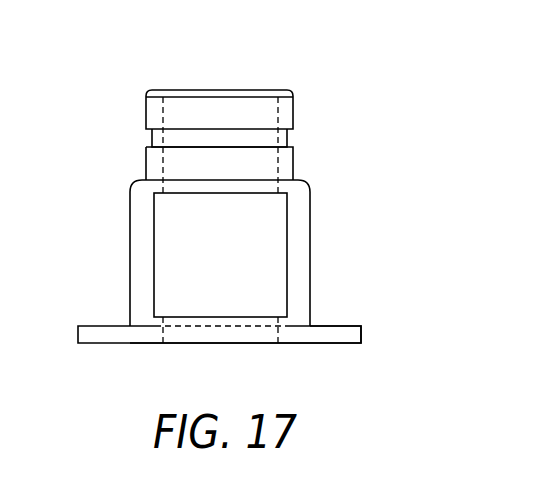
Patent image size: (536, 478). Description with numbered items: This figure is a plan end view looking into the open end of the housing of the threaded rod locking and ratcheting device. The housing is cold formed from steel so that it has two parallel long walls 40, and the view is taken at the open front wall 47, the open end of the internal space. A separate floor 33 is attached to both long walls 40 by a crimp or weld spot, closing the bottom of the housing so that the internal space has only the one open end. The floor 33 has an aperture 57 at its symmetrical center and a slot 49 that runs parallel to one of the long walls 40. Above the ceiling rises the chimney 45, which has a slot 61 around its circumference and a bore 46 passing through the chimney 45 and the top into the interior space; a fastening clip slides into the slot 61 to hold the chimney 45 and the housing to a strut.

The floor 33 is at (102, 344).
The long walls 40 is at (130, 262).
The chimney 45 is at (294, 94).
The bore 46 is at (220, 90).
The open front wall 47 is at (238, 278).
The slot 49 is at (338, 344).
The aperture 57 is at (220, 344).
The slot 61 is at (287, 137).